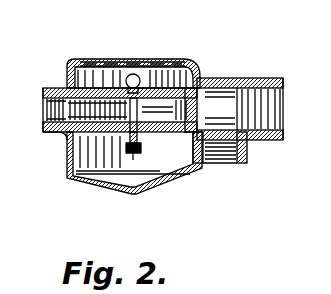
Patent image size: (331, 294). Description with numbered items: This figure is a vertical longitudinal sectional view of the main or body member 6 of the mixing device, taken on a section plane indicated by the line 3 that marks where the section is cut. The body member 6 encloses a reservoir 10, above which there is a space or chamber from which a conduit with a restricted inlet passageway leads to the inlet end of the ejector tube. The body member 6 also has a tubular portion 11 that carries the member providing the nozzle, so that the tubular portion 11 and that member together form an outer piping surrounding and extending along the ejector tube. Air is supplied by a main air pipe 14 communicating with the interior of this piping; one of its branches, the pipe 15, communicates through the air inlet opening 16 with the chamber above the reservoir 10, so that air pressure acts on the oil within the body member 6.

The section line 3- 3 is at (133, 221).
The main or body member 6 is at (191, 66).
The air inlet opening 16 is at (148, 62).
The tubular portion 11 is at (267, 78).
The main air pipe 14 is at (222, 165).
The pipe 15 is at (137, 148).
The reservoir 10 is at (147, 136).